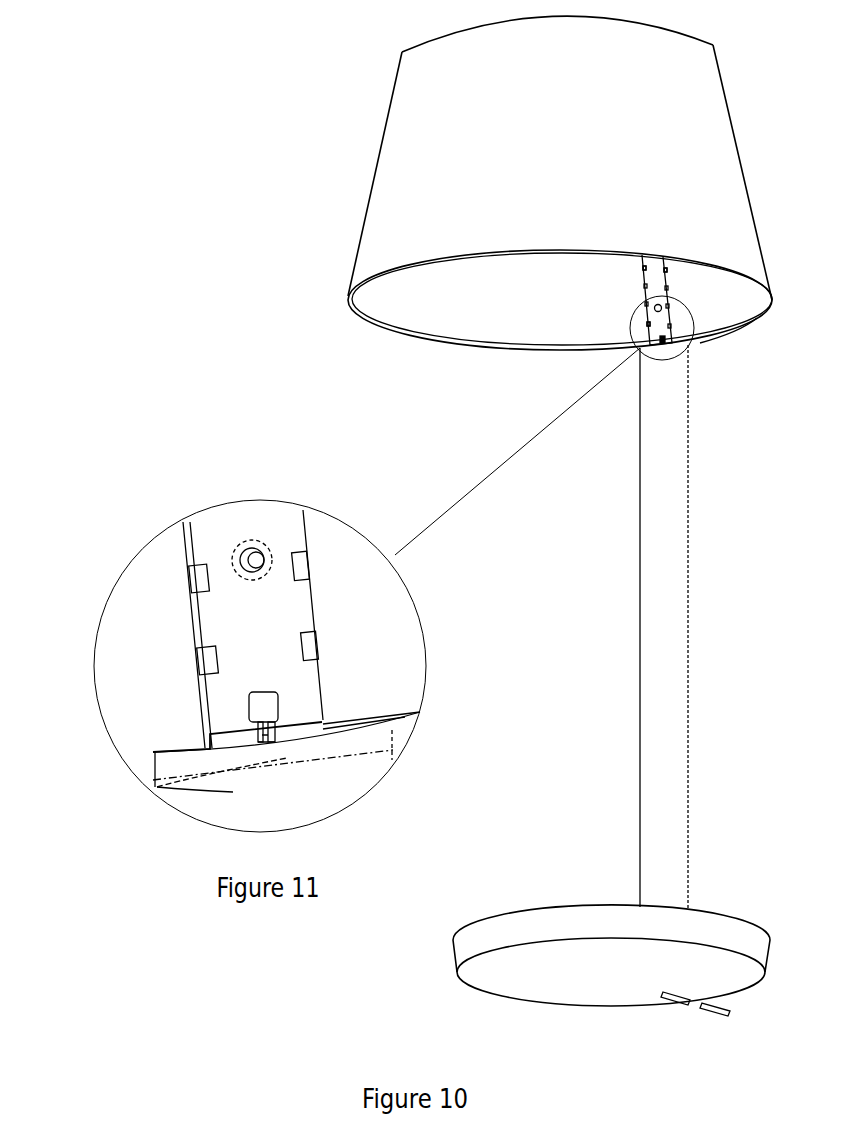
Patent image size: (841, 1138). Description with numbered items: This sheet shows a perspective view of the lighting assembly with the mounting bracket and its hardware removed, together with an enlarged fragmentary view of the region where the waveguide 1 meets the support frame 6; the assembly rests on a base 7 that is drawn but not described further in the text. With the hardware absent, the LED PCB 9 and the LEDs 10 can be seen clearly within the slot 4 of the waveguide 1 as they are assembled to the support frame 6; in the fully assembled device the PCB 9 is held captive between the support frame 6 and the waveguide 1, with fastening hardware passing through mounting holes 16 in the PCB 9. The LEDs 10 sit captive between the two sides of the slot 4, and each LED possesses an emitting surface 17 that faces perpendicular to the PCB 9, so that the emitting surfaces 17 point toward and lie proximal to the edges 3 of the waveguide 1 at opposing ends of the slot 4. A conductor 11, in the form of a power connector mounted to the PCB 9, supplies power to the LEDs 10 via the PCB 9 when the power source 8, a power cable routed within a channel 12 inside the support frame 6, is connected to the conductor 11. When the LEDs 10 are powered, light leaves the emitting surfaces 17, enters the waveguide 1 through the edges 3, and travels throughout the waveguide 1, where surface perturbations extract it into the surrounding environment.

In FIG. 10, the waveguide 1 is at (402, 133).
In FIG. 11, the waveguide 1 is at (153, 644).
In FIG. 10, the edges of the waveguide 3 is at (640, 288).
In FIG. 11, the edges of the waveguide 3 is at (193, 630).
In FIG. 10, the slot 4 is at (757, 318).
In FIG. 10, the support frame 6 is at (681, 453).
In FIG. 11, the support frame 6 is at (232, 792).
In FIG. 10, the base 7 is at (573, 927).
In FIG. 10, the power source 8 is at (710, 1010).
In FIG. 11, the power source 8 is at (320, 737).
In FIG. 10, the LED PCB 9 is at (663, 320).
In FIG. 11, the LED PCB 9 is at (247, 515).
In FIG. 11, the LEDs 10 is at (200, 690).
In FIG. 11, the conductor 11 is at (283, 700).
In FIG. 11, the channel 12 is at (153, 784).
In FIG. 11, the mounting holes 16 is at (266, 545).
In FIG. 10, the emitting surface 17 is at (640, 300).
In FIG. 11, the emitting surface 17 is at (187, 580).